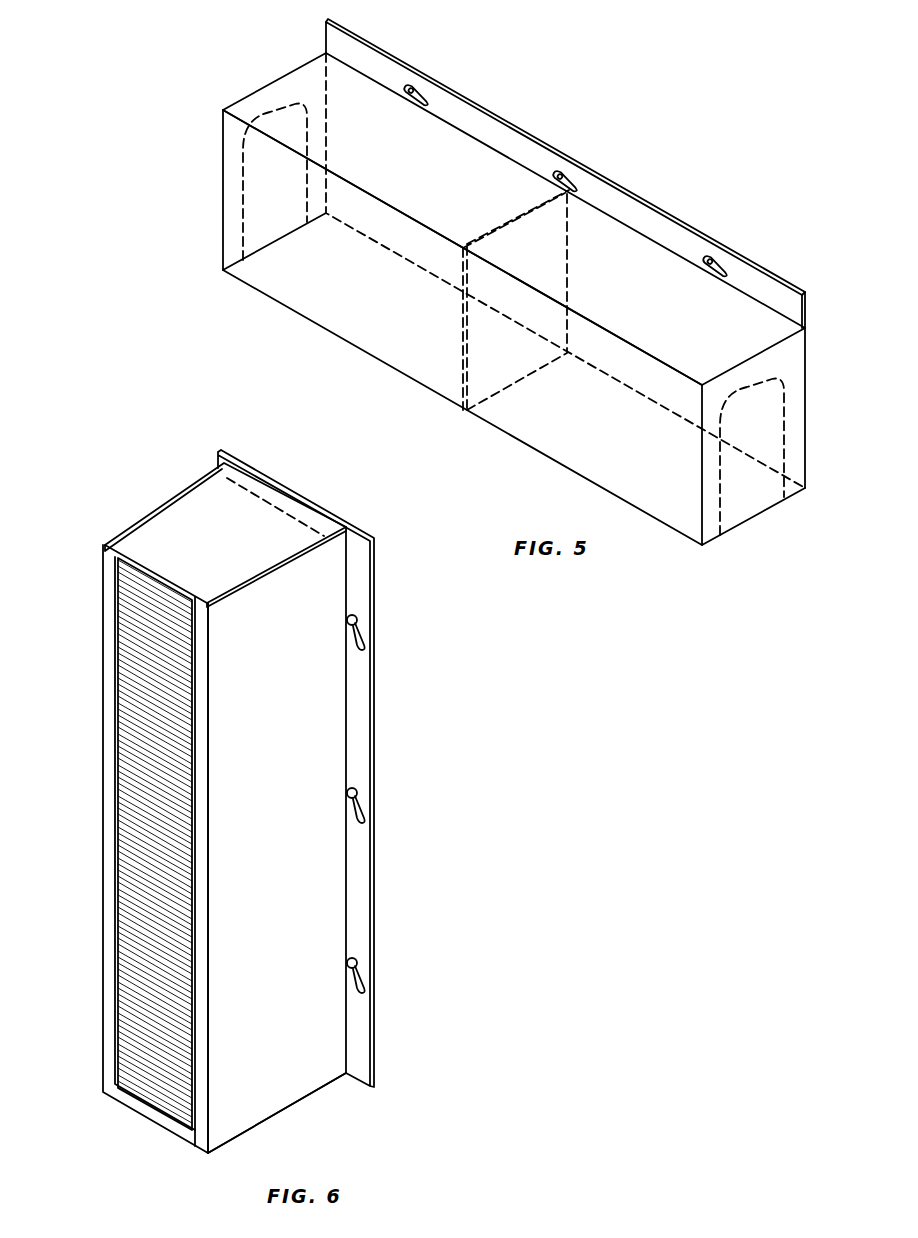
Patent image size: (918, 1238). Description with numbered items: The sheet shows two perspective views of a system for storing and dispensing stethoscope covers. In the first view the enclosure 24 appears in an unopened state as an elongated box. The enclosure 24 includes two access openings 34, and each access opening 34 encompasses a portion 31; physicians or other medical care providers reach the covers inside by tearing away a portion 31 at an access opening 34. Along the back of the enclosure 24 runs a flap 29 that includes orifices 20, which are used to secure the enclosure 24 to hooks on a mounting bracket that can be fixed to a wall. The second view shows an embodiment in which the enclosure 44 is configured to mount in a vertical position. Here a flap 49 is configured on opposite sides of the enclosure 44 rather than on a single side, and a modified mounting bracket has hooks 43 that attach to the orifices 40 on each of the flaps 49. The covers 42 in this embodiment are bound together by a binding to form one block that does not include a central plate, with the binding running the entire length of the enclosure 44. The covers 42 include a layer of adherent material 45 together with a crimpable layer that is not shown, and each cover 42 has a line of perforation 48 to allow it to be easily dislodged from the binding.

In FIG. 5, the orifices 20 is at (423, 86).
In FIG. 5, the enclosure 24 is at (283, 90).
In FIG. 5, the flap 29 is at (780, 302).
In FIG. 5, the portion 31 is at (272, 176).
In FIG. 5, the access openings 34 is at (243, 207).
In FIG. 6, the orifices 40 is at (365, 648).
In FIG. 6, the covers 42 is at (122, 557).
In FIG. 6, the hooks 43 is at (358, 618).
In FIG. 6, the enclosure 44 is at (293, 1082).
In FIG. 6, the layer of adherent material 45 is at (202, 508).
In FIG. 6, the line of perforation 48 is at (280, 508).
In FIG. 6, the flap 49 is at (222, 466).